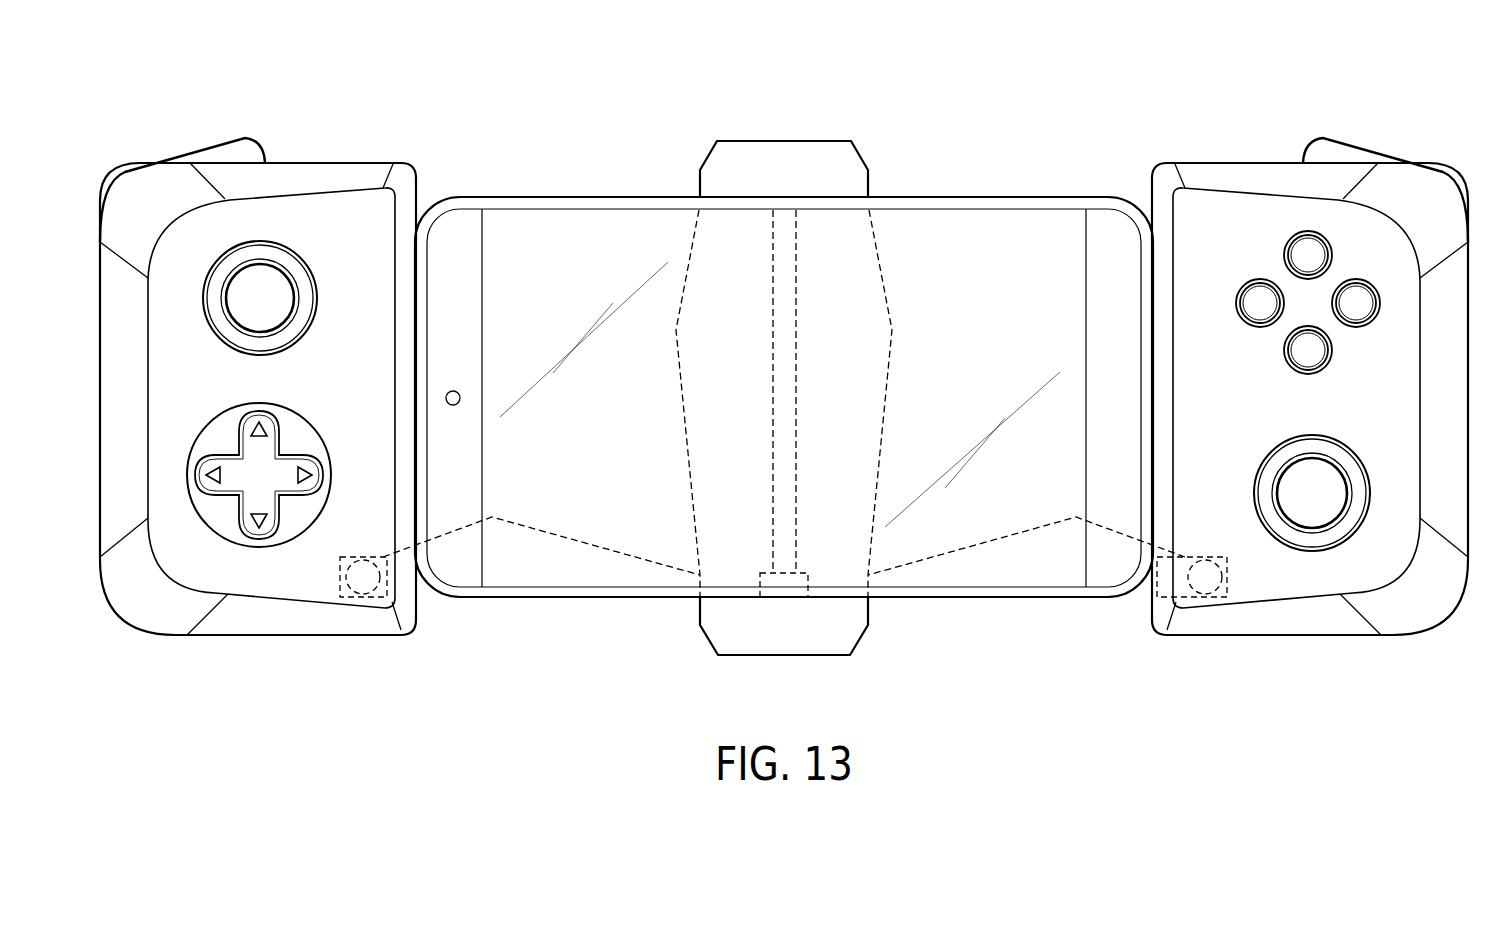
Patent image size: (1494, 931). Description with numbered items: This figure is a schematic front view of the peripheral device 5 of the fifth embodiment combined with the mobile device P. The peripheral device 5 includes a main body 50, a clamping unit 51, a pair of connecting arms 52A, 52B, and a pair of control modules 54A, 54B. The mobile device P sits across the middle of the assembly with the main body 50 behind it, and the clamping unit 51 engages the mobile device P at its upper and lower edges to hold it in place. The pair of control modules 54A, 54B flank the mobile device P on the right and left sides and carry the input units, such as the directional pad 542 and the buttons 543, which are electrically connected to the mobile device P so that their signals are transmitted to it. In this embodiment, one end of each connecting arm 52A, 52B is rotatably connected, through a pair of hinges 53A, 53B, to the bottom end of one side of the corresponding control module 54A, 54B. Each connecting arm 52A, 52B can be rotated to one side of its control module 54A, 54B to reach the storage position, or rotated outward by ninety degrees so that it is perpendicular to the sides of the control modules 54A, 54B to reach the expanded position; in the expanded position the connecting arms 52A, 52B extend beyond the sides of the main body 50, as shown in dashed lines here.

The peripheral device 5 is at (1427, 132).
The main body 50 is at (690, 228).
The clamping unit 51 is at (788, 160).
The connecting arm 52A is at (1024, 540).
The connecting arm 52B is at (578, 540).
The hinge 53A is at (1205, 580).
The hinge 53B is at (363, 580).
The control module 54A is at (1240, 171).
The control module 54B is at (348, 172).
The input unit 542 is at (238, 440).
The input unit 543 is at (1258, 307).
The mobile device P is at (990, 201).